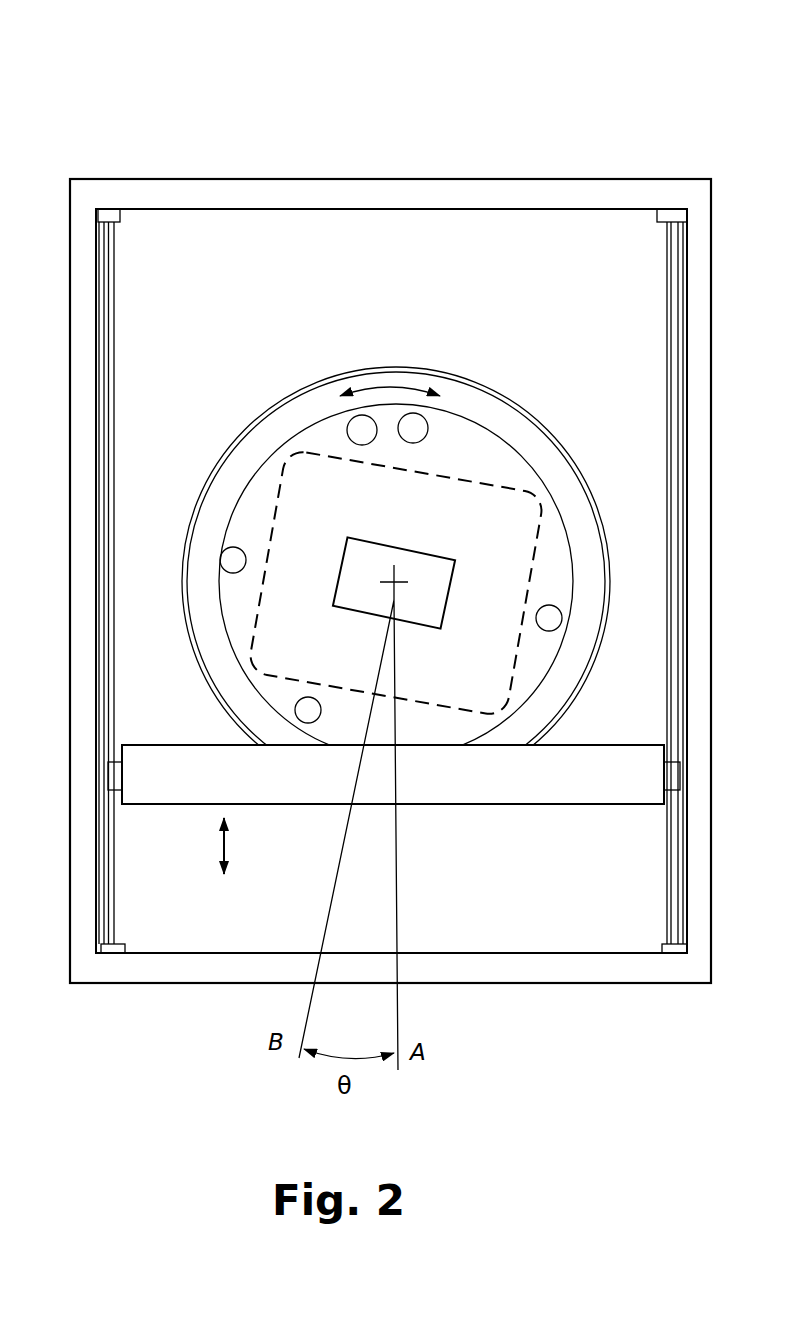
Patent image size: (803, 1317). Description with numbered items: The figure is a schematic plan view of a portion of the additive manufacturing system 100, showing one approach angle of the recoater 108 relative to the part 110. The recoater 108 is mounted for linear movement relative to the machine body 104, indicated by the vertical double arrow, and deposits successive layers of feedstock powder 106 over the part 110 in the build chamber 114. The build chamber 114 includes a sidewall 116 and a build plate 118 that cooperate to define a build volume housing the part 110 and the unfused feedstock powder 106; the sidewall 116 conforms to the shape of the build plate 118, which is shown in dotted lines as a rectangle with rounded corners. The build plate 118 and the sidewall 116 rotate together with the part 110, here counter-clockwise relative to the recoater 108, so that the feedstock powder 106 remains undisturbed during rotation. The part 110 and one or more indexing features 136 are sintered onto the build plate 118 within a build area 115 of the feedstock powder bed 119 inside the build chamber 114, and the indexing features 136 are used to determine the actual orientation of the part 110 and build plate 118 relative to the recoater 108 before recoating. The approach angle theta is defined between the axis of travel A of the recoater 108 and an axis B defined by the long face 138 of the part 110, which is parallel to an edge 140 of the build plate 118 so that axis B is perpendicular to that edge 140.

The system 100 is at (112, 178).
The machine body 104 is at (305, 178).
The feedstock powder 106 is at (420, 425).
The recoater 108 is at (553, 785).
The part 110 is at (357, 430).
The build chamber 114 is at (475, 457).
The build area 115 is at (275, 682).
The sidewall 116 is at (220, 490).
The build plate 118 is at (517, 517).
The powder bed 119 is at (548, 562).
The indexing features 136 is at (355, 580).
The long face 138 is at (416, 626).
The edge of the build plate 140 is at (463, 712).